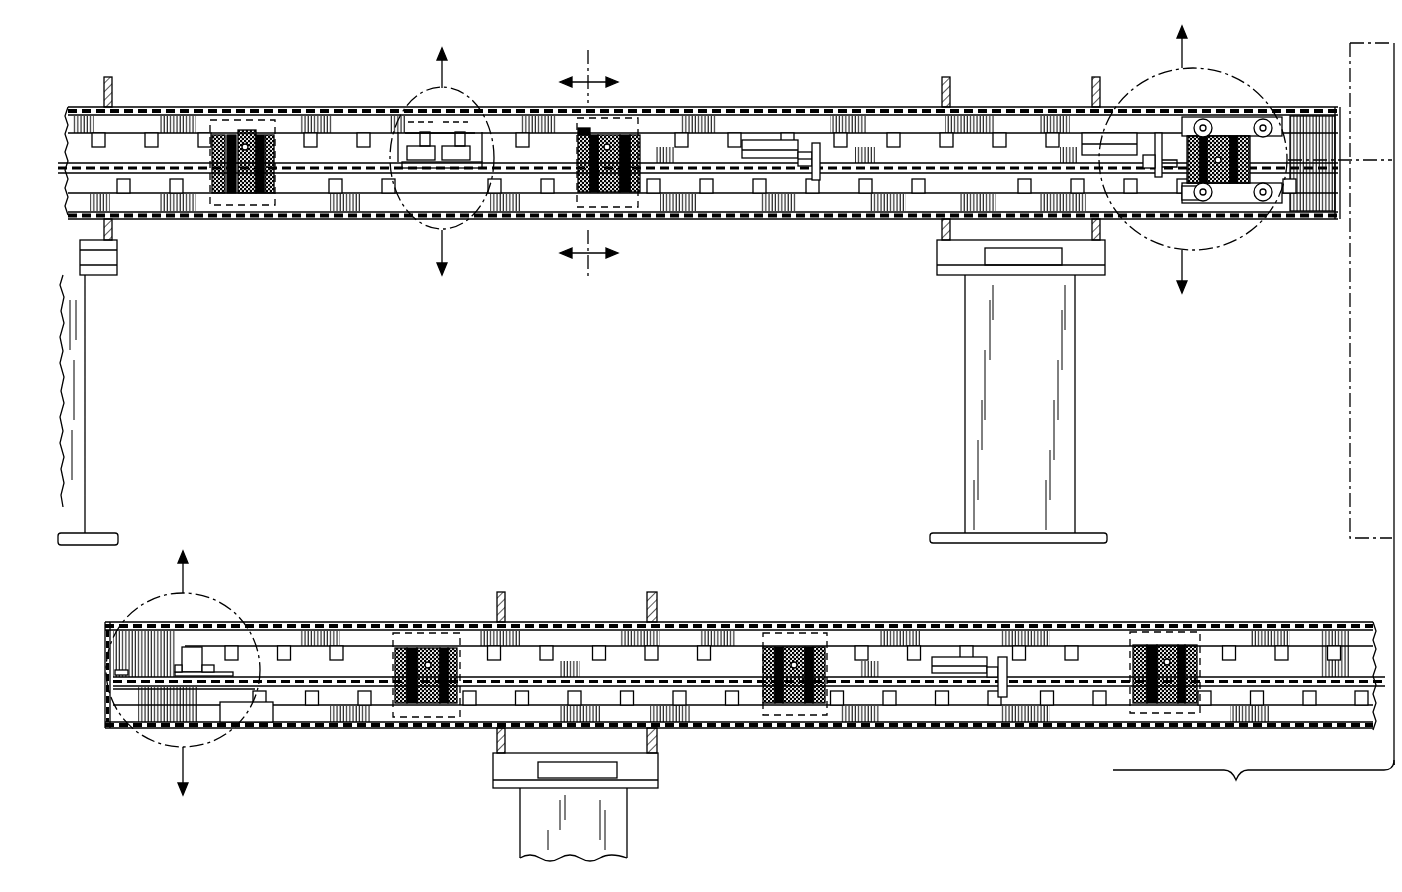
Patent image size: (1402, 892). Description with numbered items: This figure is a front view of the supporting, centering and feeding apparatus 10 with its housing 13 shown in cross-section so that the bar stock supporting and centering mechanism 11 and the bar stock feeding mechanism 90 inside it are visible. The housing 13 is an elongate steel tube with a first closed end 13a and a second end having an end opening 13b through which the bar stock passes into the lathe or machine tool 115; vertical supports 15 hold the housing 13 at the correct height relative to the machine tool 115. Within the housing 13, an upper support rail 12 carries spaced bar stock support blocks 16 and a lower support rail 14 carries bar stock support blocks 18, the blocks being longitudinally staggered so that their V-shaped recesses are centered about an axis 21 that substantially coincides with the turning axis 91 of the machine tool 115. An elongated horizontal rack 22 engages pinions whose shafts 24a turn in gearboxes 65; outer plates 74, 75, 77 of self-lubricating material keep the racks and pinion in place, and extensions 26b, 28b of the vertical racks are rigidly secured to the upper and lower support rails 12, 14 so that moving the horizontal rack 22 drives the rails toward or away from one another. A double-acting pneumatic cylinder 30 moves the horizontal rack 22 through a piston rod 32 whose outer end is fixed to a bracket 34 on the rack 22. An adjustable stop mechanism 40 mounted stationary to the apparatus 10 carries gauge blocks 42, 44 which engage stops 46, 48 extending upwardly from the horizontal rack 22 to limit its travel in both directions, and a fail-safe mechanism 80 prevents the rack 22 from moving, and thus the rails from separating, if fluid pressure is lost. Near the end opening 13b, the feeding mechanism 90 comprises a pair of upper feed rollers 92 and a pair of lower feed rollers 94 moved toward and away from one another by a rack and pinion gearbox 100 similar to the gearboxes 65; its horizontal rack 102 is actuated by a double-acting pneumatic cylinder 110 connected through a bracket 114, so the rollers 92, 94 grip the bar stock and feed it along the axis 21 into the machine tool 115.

The apparatus 10 is at (795, 505).
The bar stock supporting and centering mechanism 11 is at (843, 207).
The upper support rail 12 is at (730, 120).
The housing 13 is at (725, 218).
The first closed end 13a is at (104, 707).
The end opening 13b is at (1328, 188).
The lower support rail 14 is at (672, 218).
The vertical supports 15 is at (88, 446).
The bar stock support blocks 16 is at (150, 128).
The bar stock support blocks 18 is at (176, 220).
The axis 21 is at (1296, 138).
The elongated horizontal rack 22 is at (298, 215).
The shaft 24a is at (247, 135).
The extension 26b is at (220, 133).
The extension 28b is at (246, 210).
The double-acting pneumatic cylinder 30 is at (763, 140).
The piston rod 32 is at (812, 140).
The bracket 34 is at (833, 142).
The adjustable stop mechanism 40 is at (198, 648).
The gauge block 42 is at (167, 655).
The gauge block 44 is at (210, 668).
The stop 46 is at (112, 676).
The stop 48 is at (232, 684).
The gearbox 65 is at (580, 190).
The outer plate 74 is at (640, 145).
The outer plate 75 is at (610, 132).
The outer plate 77 is at (577, 148).
The fail-safe mechanism 80 is at (447, 130).
The bar stock feeding mechanism 90 is at (1258, 92).
The turning axis 91 is at (1380, 166).
The upper feed rollers 92 is at (1205, 118).
The lower feed rollers 94 is at (1258, 204).
The rack and pinion gearbox 100 is at (1223, 172).
The horizontal rack 102 is at (1152, 215).
The double-acting pneumatic cylinder 110 is at (1110, 135).
The bracket 114 is at (1162, 132).
The machine tool 115 is at (1344, 320).